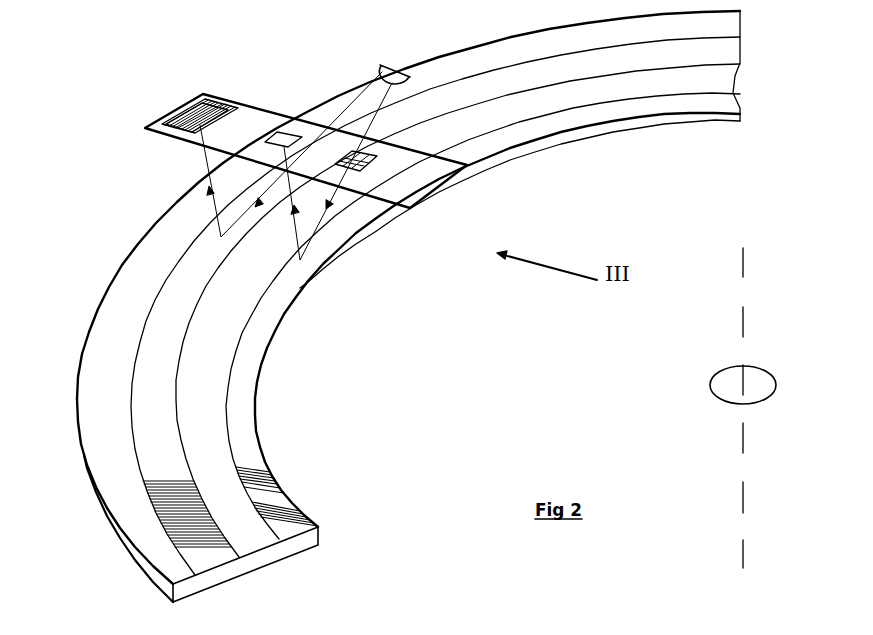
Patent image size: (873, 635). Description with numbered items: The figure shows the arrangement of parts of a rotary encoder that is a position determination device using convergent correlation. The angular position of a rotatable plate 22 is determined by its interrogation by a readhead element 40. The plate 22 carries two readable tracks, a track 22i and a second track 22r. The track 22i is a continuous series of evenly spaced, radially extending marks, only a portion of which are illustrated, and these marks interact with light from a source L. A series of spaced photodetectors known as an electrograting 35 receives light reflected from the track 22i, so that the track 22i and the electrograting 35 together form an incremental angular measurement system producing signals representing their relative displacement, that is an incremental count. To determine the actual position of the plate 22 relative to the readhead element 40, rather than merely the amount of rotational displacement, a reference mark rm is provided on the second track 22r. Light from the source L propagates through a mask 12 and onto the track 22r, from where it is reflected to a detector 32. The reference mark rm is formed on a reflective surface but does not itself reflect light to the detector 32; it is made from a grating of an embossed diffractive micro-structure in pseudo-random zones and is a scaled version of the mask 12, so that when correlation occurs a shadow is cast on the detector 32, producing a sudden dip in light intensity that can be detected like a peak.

The rotatable plate 22 is at (408, 306).
The second track 22r is at (483, 316).
The reference mark rm is at (270, 463).
The track 22i is at (212, 548).
The mask 12 is at (376, 164).
The readhead element 40 is at (285, 115).
The electrograting 35 is at (185, 108).
The detector 32 is at (291, 130).
The source L is at (305, 144).